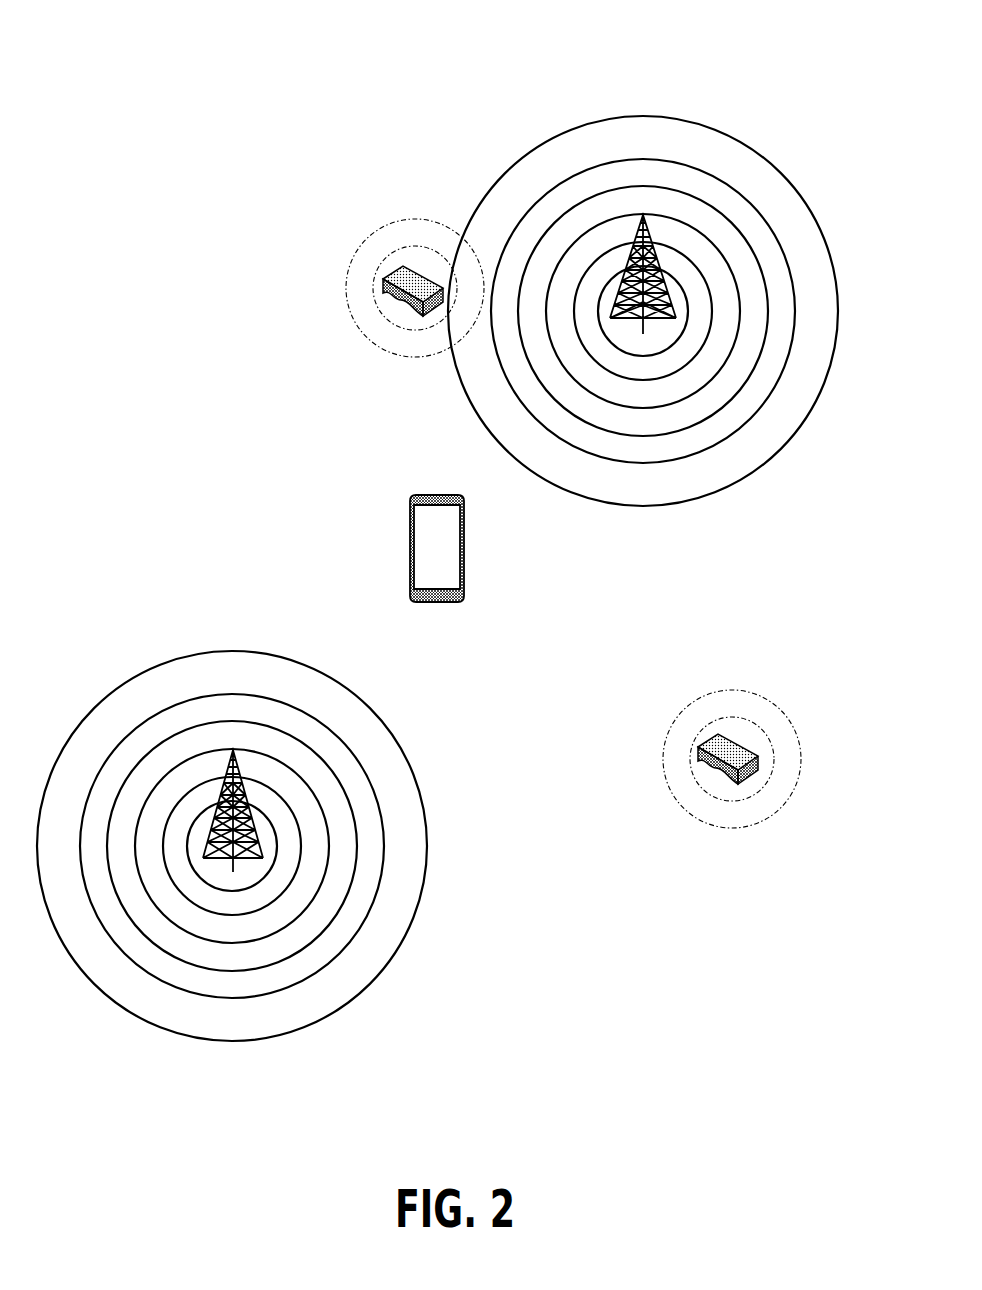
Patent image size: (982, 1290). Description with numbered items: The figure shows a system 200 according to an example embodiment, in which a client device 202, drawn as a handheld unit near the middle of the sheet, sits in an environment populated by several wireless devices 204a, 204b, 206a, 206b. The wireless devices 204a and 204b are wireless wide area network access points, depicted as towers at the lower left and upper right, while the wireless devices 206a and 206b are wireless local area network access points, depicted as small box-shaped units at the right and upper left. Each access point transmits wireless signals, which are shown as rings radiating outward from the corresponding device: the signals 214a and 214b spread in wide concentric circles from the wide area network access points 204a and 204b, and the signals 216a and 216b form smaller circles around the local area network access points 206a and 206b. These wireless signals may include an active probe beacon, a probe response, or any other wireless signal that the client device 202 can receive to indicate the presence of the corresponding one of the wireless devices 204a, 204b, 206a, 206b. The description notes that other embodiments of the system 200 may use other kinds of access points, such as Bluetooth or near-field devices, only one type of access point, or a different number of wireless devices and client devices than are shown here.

The system 200 is at (62, 60).
The client device 202 is at (413, 495).
The wireless device 204a is at (233, 750).
The wireless device 204b is at (644, 215).
The wireless device 206a is at (698, 747).
The wireless device 206b is at (383, 278).
The signal 214a is at (142, 673).
The signal 214b is at (592, 119).
The signal 216a is at (743, 690).
The signal 216b is at (381, 230).